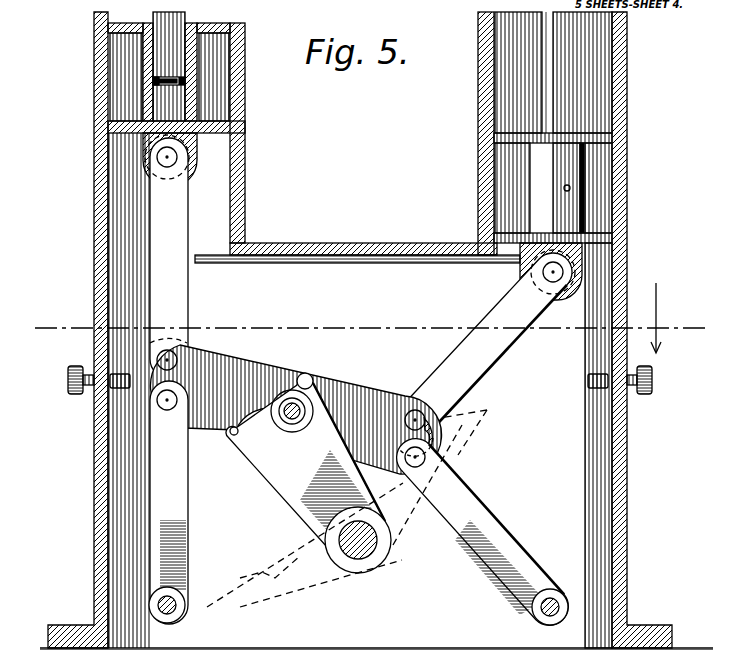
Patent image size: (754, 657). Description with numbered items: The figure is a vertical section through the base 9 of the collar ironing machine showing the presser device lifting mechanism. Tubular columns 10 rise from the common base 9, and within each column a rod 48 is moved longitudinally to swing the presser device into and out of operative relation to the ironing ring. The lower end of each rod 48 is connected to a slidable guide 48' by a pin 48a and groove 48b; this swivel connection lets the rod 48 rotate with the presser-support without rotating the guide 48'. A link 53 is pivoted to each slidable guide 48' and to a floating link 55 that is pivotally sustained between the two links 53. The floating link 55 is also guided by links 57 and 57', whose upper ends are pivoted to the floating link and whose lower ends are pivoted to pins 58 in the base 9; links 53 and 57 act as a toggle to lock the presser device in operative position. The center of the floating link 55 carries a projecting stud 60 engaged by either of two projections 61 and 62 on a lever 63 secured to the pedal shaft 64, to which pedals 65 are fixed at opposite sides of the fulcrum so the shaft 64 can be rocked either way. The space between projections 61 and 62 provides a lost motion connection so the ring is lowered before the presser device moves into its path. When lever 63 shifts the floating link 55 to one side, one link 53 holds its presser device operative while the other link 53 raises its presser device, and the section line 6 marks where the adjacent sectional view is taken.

The section line 6— 6 is at (359, 318).
The base 9 is at (94, 497).
The tubular support or column 10 is at (94, 72).
The rod 48 is at (334, 122).
The pin 48a is at (185, 80).
The groove 48b is at (154, 80).
The slidable guide 48' is at (457, 180).
The link 53 is at (360, 287).
The floating link 55 is at (347, 388).
The link 57 is at (169, 487).
The link 57' is at (483, 517).
The pin 58 is at (175, 604).
The projecting stud 60 is at (287, 405).
The projection 61 is at (232, 436).
The projection 62 is at (312, 381).
The lever 63 is at (288, 485).
The shaft 64 is at (375, 554).
The pedals 65 is at (244, 578).